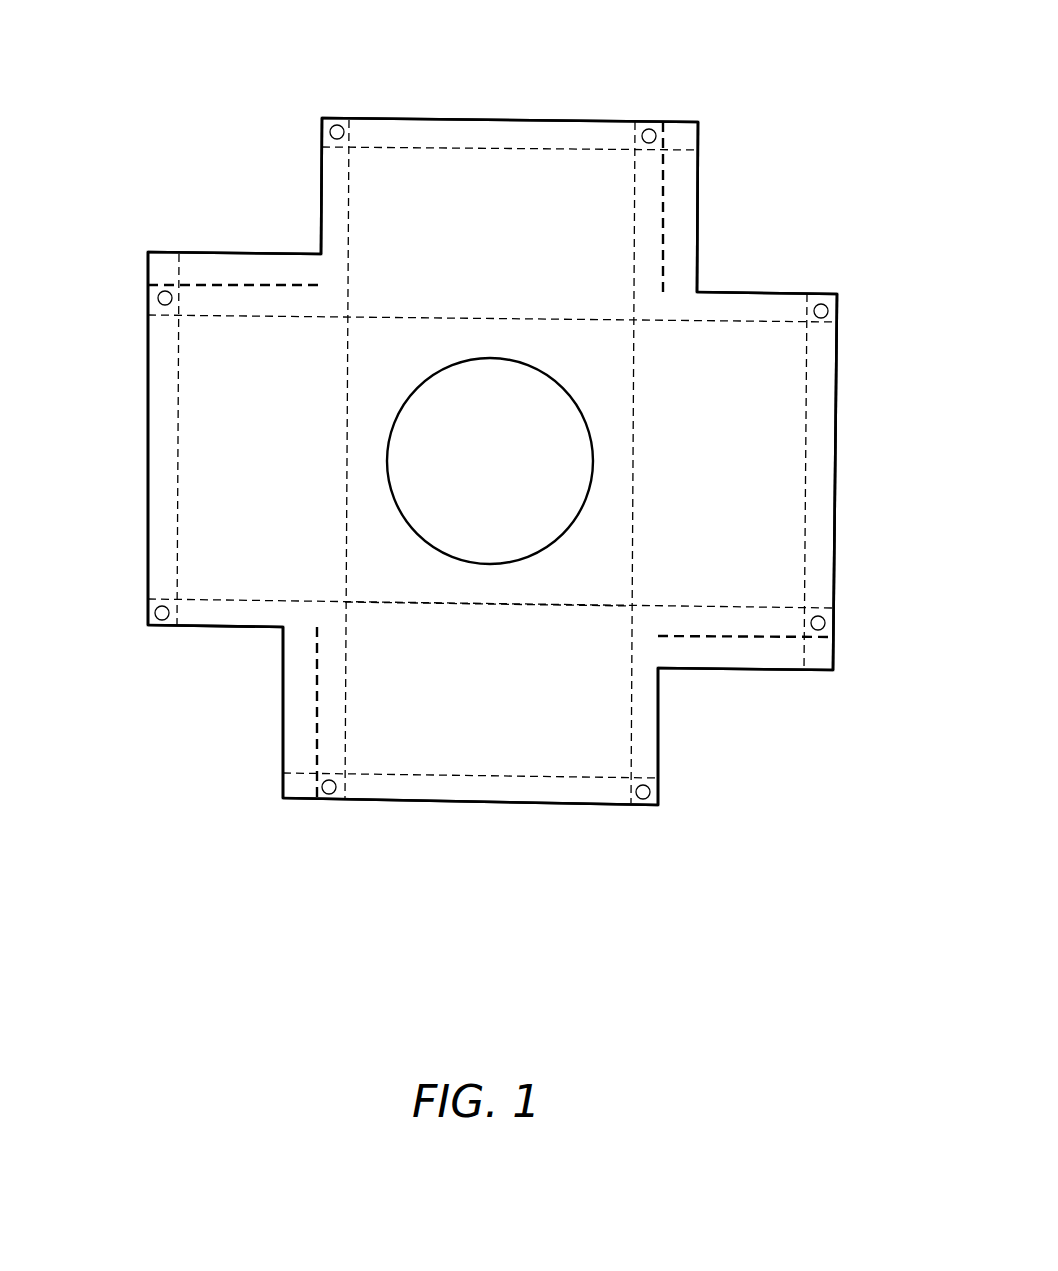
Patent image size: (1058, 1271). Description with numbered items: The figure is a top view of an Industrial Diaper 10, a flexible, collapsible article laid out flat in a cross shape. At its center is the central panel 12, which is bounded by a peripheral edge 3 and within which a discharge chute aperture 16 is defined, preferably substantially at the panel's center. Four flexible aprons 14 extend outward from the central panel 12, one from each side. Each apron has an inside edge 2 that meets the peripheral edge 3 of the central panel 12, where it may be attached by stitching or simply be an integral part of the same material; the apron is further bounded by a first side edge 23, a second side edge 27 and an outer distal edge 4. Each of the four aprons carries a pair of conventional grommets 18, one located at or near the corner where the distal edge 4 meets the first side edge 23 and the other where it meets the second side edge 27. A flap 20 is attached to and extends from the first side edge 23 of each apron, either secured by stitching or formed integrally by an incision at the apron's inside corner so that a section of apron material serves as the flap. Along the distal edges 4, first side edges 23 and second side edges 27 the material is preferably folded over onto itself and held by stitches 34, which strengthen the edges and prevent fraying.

The inside edge 2 is at (591, 318).
The peripheral edge 3 is at (535, 602).
The distal edge 4 is at (570, 120).
The Industrial Diaper 10 is at (432, 830).
The central panel 12 is at (375, 374).
The flexible apron 14 is at (465, 202).
The discharge chute aperture 16 is at (460, 475).
The grommet 18 is at (338, 125).
The flap 20 is at (168, 265).
The first side edge 23 is at (248, 285).
The second side edge 27 is at (323, 187).
The stitches 34 is at (178, 392).